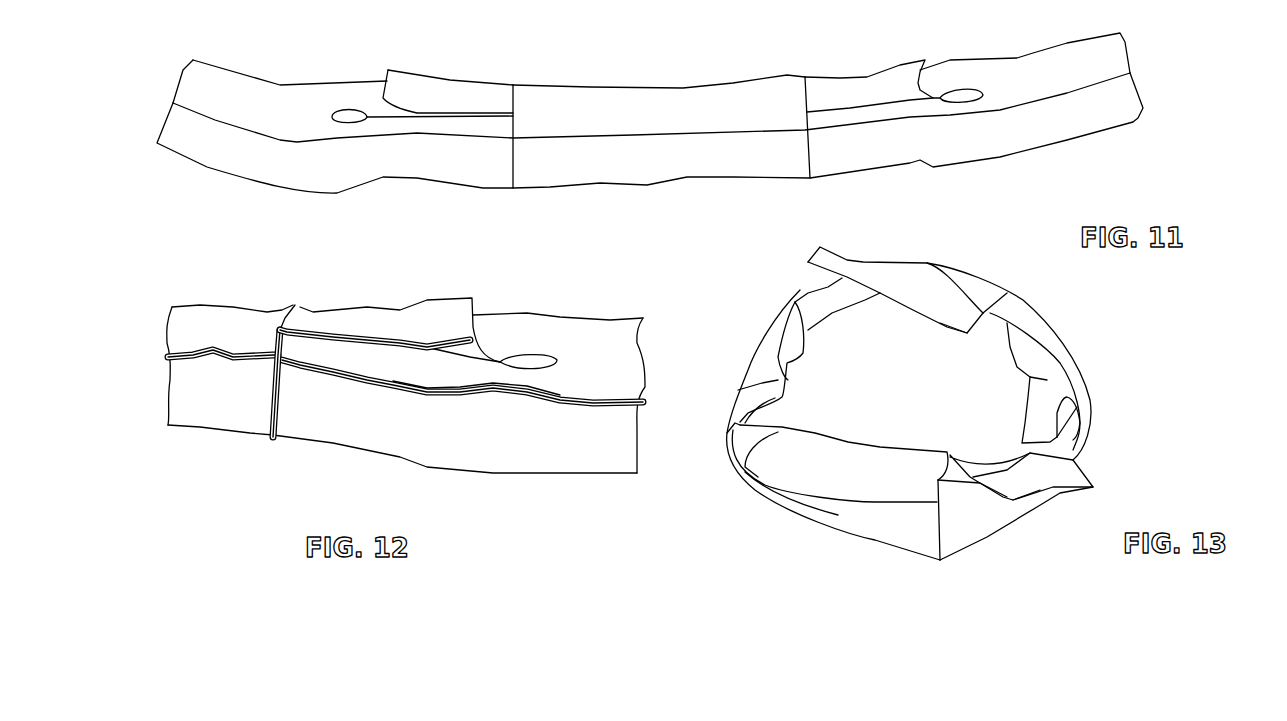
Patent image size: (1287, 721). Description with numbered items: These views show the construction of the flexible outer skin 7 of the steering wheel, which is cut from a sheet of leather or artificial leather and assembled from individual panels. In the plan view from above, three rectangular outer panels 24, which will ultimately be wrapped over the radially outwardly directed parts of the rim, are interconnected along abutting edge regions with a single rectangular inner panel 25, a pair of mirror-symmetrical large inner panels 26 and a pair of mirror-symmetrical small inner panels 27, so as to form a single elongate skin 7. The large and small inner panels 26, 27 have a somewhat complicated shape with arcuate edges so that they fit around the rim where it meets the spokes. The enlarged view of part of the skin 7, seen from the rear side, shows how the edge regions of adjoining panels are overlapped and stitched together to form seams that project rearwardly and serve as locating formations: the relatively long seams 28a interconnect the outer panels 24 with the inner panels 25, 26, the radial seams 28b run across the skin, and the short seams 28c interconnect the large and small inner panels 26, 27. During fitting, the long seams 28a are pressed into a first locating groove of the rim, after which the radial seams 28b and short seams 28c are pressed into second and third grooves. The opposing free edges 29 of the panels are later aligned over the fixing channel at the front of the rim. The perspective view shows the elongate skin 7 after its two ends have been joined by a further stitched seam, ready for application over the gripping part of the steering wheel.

In FIG. 11, the outer skin 7 is at (650, 128).
In FIG. 13, the outer skin 7 is at (1063, 343).
In FIG. 11, the outer panel 24 is at (415, 165).
In FIG. 12, the outer panel 24 is at (423, 447).
In FIG. 11, the inner panel 25 is at (687, 97).
In FIG. 12, the inner panel 25 is at (248, 318).
In FIG. 11, the large inner panel 26 is at (328, 87).
In FIG. 12, the large inner panel 26 is at (575, 335).
In FIG. 11, the small inner panel 27 is at (443, 90).
In FIG. 12, the small inner panel 27 is at (422, 315).
In FIG. 12, the long seam 28a is at (215, 348).
In FIG. 12, the radial seam 28b is at (268, 422).
In FIG. 12, the short seam 28c is at (333, 333).
In FIG. 11, the free edge 29 is at (633, 85).
In FIG. 12, the free edge 29 is at (185, 303).